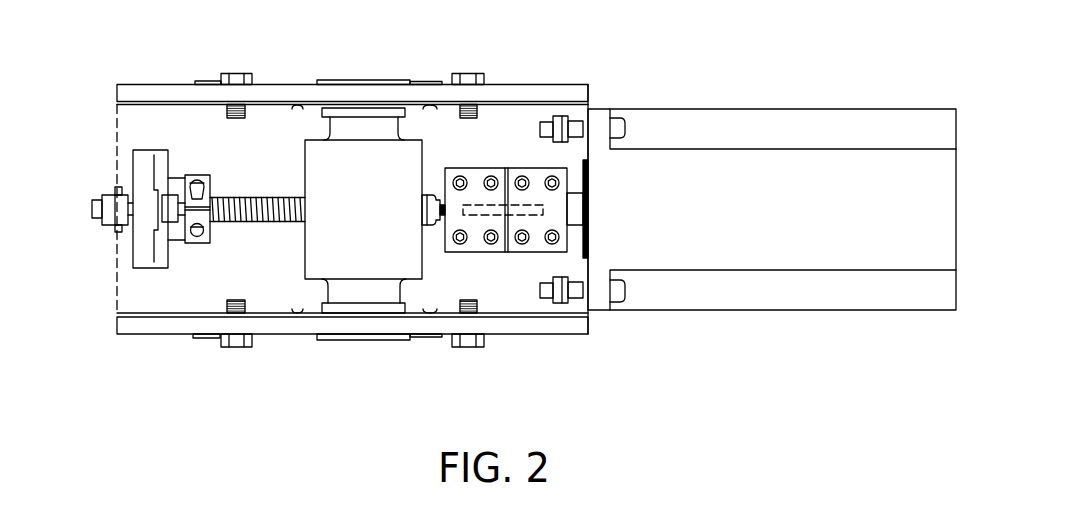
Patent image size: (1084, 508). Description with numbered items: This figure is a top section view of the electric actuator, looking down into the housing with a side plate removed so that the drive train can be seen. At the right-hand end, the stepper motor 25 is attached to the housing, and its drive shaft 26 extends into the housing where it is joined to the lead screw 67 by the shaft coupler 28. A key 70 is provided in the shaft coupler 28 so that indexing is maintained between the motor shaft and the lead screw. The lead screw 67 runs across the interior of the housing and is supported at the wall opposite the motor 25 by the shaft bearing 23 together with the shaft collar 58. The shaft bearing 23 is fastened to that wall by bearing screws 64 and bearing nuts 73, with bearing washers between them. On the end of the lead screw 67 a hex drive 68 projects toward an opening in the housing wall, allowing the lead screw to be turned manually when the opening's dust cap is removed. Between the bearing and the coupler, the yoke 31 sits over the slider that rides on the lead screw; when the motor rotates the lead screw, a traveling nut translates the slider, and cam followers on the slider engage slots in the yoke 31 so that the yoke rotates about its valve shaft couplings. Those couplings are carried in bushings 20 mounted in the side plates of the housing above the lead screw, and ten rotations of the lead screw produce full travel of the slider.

The bushings 20 is at (393, 81).
The shaft bearing 23 is at (163, 268).
The stepper motor 25 is at (737, 109).
The drive shaft 26 is at (572, 190).
The shaft coupler 28 is at (473, 168).
The yoke 31 is at (313, 142).
The shaft collar 58 is at (205, 173).
The bearing screws 64 is at (98, 198).
The lead screw 67 is at (247, 224).
The hex drive 68 is at (130, 223).
The key 70 is at (537, 215).
The bearing nuts 73 is at (89, 175).